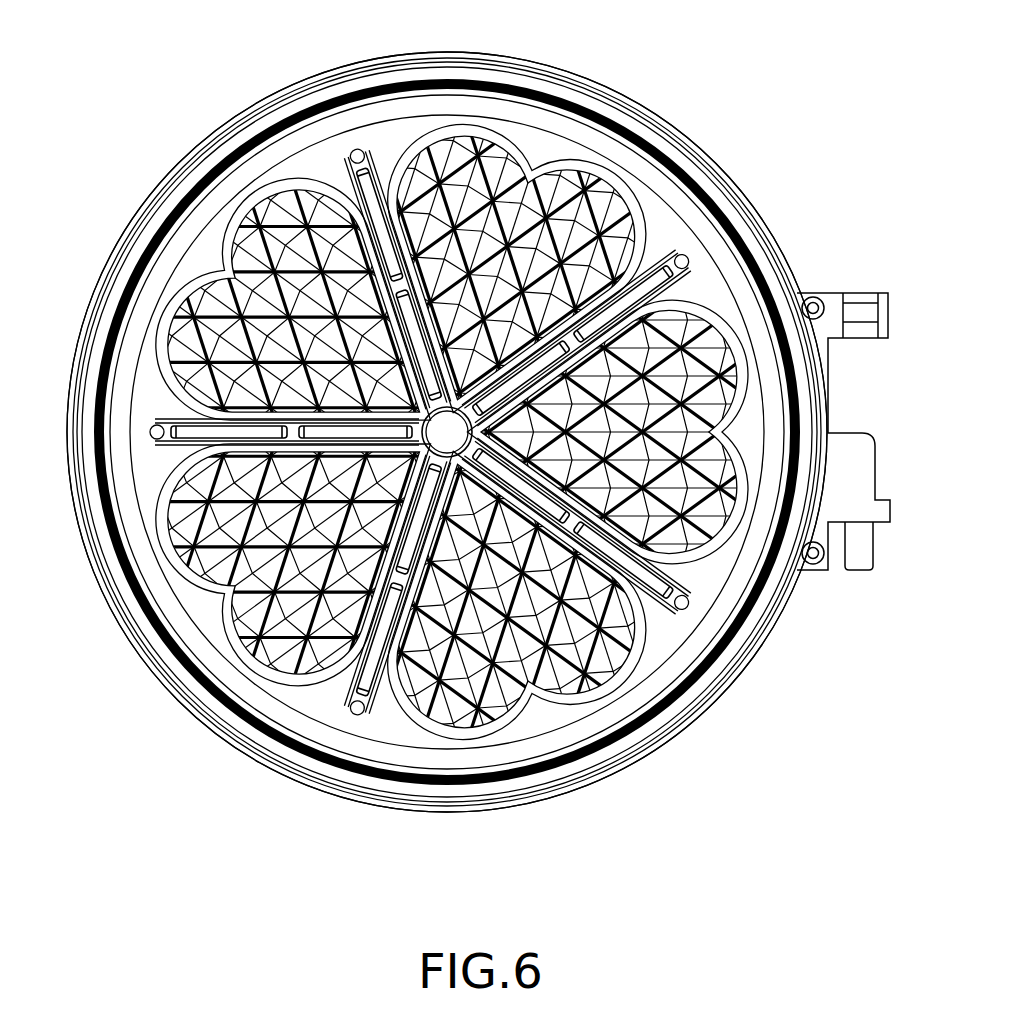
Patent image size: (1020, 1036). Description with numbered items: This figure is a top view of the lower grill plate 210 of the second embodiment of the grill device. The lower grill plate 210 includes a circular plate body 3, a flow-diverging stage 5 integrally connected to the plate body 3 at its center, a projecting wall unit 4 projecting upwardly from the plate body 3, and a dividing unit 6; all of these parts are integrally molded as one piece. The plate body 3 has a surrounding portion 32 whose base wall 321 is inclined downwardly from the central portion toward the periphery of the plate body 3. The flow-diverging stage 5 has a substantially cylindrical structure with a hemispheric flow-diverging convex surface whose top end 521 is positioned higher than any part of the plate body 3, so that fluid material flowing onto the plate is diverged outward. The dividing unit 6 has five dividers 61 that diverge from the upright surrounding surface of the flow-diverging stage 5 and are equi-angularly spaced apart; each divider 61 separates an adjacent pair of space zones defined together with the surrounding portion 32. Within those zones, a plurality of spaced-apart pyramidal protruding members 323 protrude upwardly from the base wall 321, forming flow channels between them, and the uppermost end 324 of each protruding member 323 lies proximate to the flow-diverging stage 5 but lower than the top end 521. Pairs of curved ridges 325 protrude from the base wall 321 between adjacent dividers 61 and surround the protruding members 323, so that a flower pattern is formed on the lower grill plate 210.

The lower grill plate 210 is at (673, 92).
The projecting wall unit 4 is at (747, 660).
The surrounding portion 32 is at (426, 432).
The base wall 321 is at (110, 425).
The plate body 3 is at (680, 662).
The flow-diverging stage 5 is at (490, 212).
The dividing unit 6 is at (372, 168).
The dividers 61 is at (623, 287).
The top end 521 is at (637, 333).
The protruding members 323 is at (443, 713).
The uppermost end 324 is at (420, 643).
The curved ridges 325 is at (148, 497).